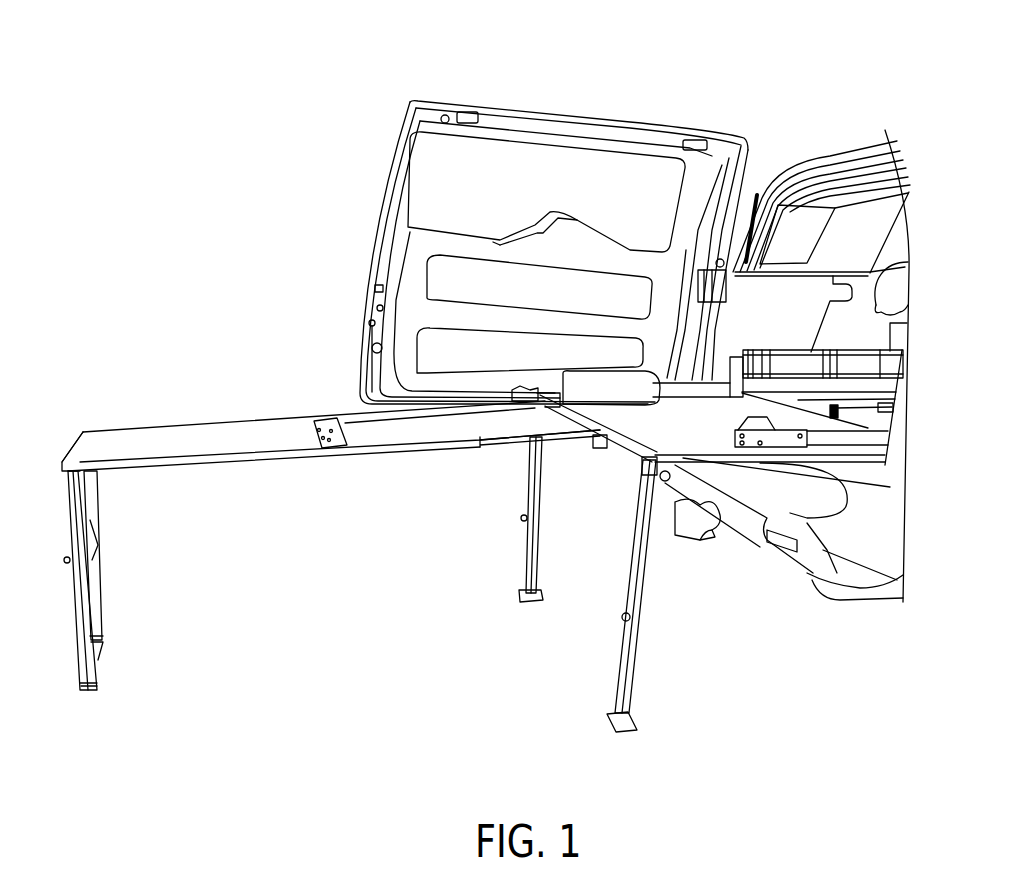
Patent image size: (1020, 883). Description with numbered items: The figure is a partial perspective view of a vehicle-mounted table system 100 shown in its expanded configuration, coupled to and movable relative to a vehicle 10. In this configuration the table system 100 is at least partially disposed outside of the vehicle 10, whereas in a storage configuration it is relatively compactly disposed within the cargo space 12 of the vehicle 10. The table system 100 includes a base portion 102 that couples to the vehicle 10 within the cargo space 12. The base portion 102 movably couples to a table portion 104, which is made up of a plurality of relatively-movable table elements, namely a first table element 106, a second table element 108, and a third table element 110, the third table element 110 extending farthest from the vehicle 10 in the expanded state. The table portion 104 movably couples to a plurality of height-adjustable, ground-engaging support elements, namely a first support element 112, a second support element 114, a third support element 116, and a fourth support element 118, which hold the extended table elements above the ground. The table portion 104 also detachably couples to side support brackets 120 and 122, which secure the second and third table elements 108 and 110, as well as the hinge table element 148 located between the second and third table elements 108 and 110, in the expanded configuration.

The vehicle 10 is at (811, 98).
The cargo space 12 is at (806, 208).
The vehicle-mounted table system 100 is at (294, 327).
The base portion 102 is at (751, 456).
The table portion 104 is at (360, 405).
The first table element 106 is at (627, 450).
The second table element 108 is at (500, 442).
The third table element 110 is at (75, 447).
The first support element 112 is at (645, 662).
The second support element 114 is at (540, 568).
The third support element 116 is at (80, 627).
The fourth support element 118 is at (100, 573).
The side support bracket 120 is at (362, 457).
The side support bracket 122 is at (400, 415).
The hinge table element 148 is at (323, 421).